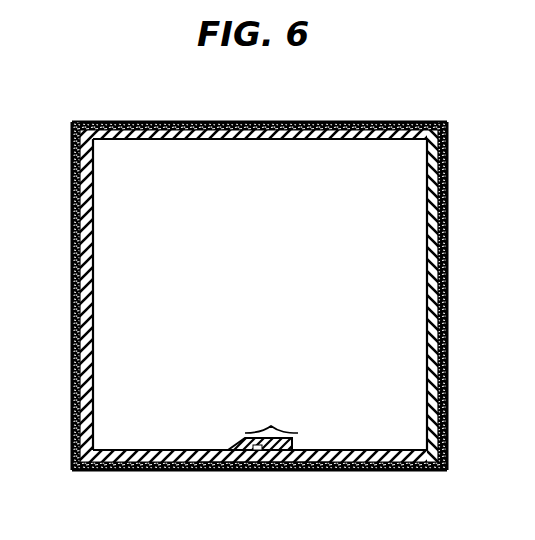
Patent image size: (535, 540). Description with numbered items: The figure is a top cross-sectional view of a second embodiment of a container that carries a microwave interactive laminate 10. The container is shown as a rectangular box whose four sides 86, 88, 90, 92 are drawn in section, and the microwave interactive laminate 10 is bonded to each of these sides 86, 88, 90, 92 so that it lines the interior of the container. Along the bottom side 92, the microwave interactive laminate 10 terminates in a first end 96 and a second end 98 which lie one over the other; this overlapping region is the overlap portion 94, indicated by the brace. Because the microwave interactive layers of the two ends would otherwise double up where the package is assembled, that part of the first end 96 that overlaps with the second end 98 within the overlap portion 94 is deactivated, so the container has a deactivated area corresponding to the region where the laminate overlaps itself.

The microwave interactive laminate 10 is at (198, 447).
The side 86 is at (449, 297).
The side 88 is at (69, 290).
The side 90 is at (388, 118).
The side 92 is at (314, 475).
The overlap portion 94 is at (274, 427).
The first end 96 is at (258, 466).
The second end 98 is at (294, 444).